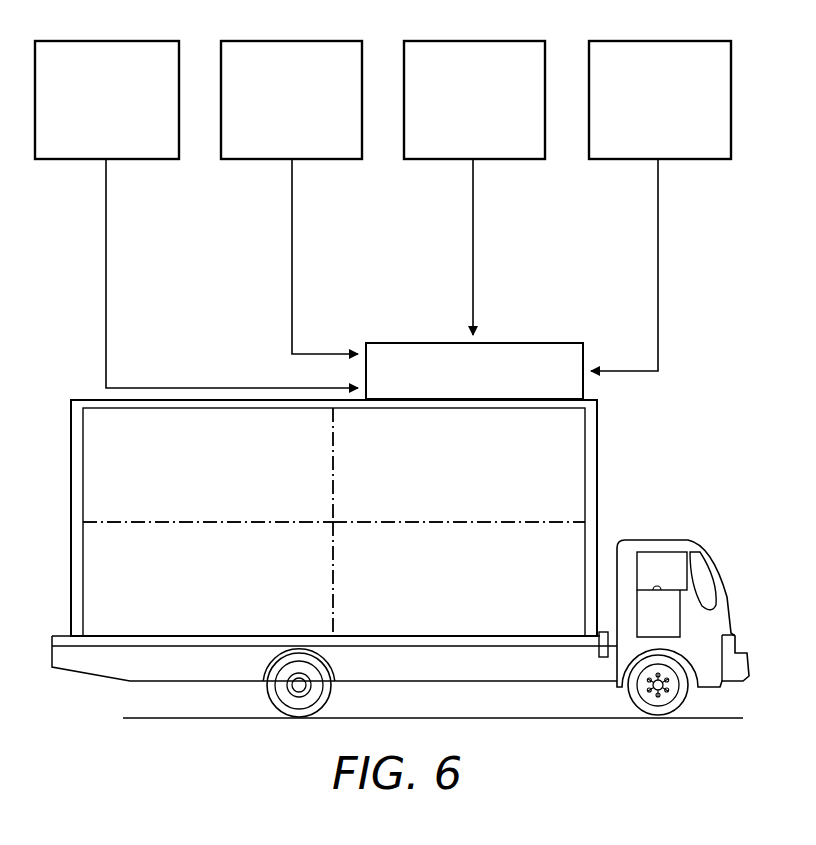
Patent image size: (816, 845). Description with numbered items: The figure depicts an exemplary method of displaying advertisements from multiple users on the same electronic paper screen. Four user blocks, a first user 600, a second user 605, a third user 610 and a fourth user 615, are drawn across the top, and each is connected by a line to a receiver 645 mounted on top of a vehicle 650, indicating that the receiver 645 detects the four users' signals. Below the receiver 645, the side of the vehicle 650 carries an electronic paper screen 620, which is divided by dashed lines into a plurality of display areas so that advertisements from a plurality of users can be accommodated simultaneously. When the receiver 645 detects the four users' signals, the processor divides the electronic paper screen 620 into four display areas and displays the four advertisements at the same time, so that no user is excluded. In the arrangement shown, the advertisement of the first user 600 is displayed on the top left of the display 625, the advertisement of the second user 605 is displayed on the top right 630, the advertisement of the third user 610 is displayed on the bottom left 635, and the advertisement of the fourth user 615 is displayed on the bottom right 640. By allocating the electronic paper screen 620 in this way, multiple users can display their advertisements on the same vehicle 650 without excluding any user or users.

The user 1 600 is at (107, 40).
The user 2 605 is at (296, 40).
The user 3 610 is at (480, 40).
The user 4 615 is at (672, 40).
The electronic paper screen 620 is at (590, 478).
The top left display area 625 is at (187, 484).
The top right display area 630 is at (433, 482).
The bottom left display area 635 is at (187, 587).
The bottom right display area 640 is at (433, 587).
The receiver 645 is at (532, 343).
The vehicle 650 is at (717, 568).